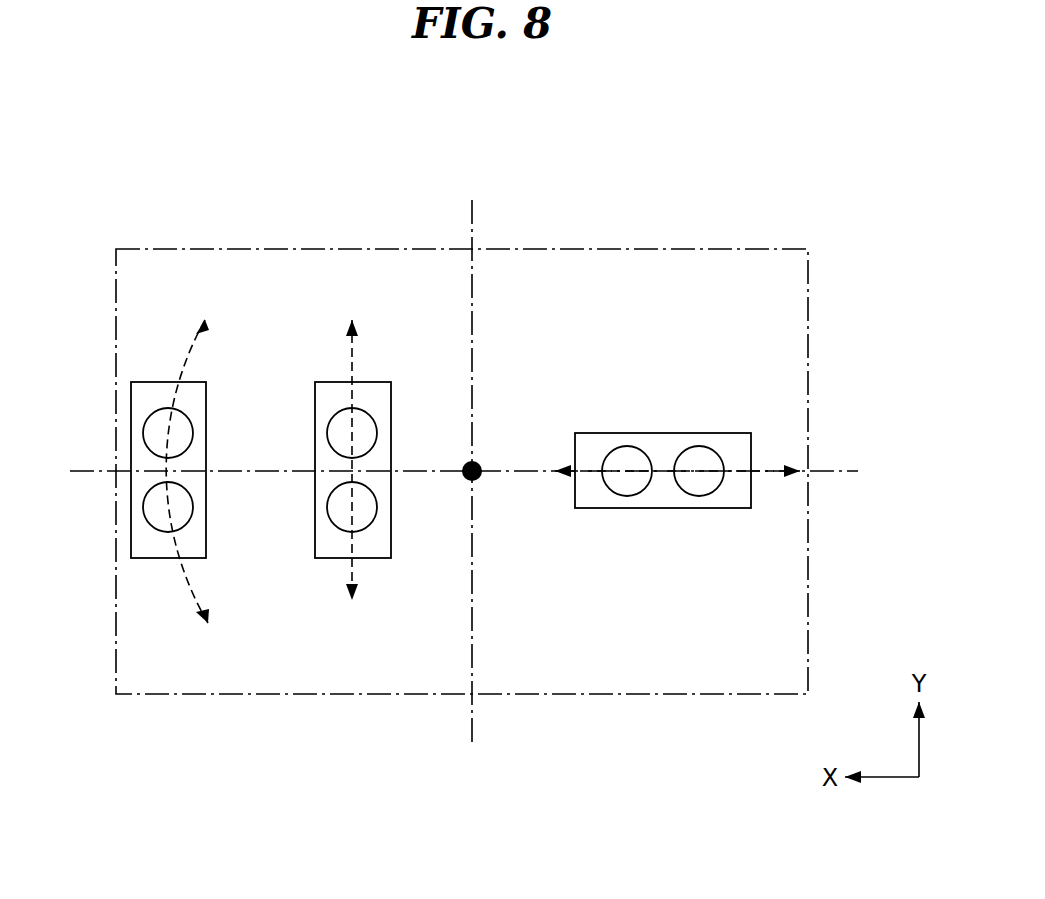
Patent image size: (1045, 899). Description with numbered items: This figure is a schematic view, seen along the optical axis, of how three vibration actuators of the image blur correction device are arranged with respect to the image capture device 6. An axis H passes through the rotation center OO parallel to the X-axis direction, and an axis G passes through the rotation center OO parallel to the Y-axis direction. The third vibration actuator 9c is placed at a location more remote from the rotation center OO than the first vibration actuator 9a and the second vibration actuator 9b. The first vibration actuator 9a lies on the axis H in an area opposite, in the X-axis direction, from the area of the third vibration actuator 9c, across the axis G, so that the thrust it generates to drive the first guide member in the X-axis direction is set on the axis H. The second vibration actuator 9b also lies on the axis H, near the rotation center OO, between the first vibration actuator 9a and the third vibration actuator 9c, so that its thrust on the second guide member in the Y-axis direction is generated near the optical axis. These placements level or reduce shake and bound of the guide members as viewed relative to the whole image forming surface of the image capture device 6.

The image capture device 6 is at (116, 633).
The first vibration actuator 9a is at (600, 448).
The second vibration actuator 9b is at (333, 397).
The third vibration actuator 9c is at (152, 400).
The rotation center OO is at (480, 478).
The axis H is at (831, 471).
The axis G is at (472, 713).